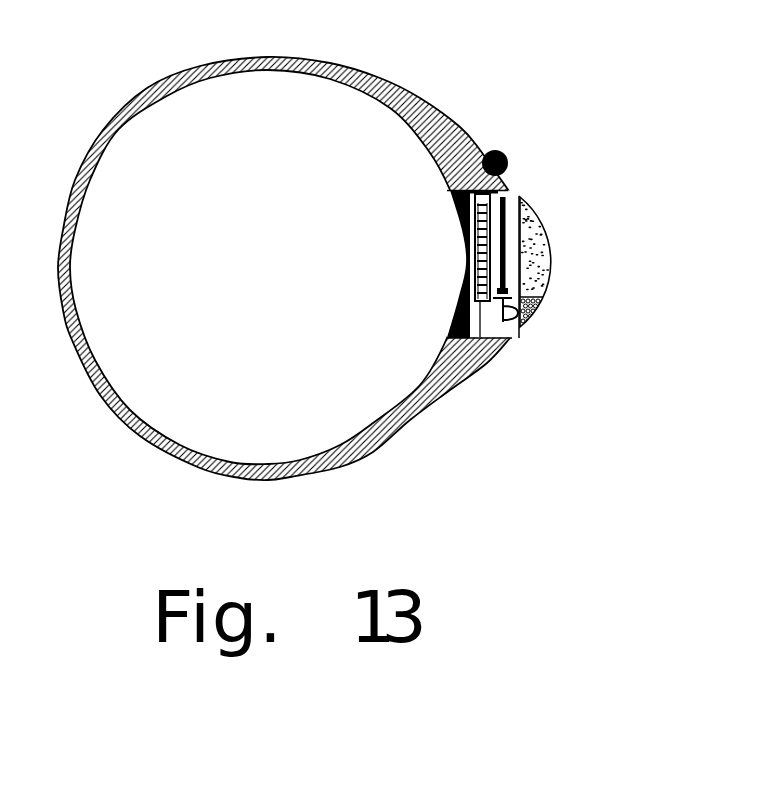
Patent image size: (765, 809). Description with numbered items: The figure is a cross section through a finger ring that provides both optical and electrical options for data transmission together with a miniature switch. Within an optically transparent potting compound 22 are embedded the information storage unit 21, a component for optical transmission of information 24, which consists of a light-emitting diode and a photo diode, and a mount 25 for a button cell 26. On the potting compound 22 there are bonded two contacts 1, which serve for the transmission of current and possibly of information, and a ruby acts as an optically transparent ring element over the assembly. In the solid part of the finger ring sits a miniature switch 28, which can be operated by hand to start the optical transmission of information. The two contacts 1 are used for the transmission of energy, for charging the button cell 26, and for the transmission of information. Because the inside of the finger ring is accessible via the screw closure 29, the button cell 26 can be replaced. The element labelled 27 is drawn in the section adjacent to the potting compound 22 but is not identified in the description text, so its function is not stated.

The contacts 1 is at (536, 247).
The information storage unit 21 is at (513, 198).
The potting compound 22 is at (498, 336).
The component for optical transmission of information 24 is at (510, 316).
The mount 25 is at (486, 308).
The button cell 26 is at (477, 200).
The seal 27 is at (537, 318).
The miniature switch 28 is at (516, 146).
The screw closure 29 is at (458, 215).